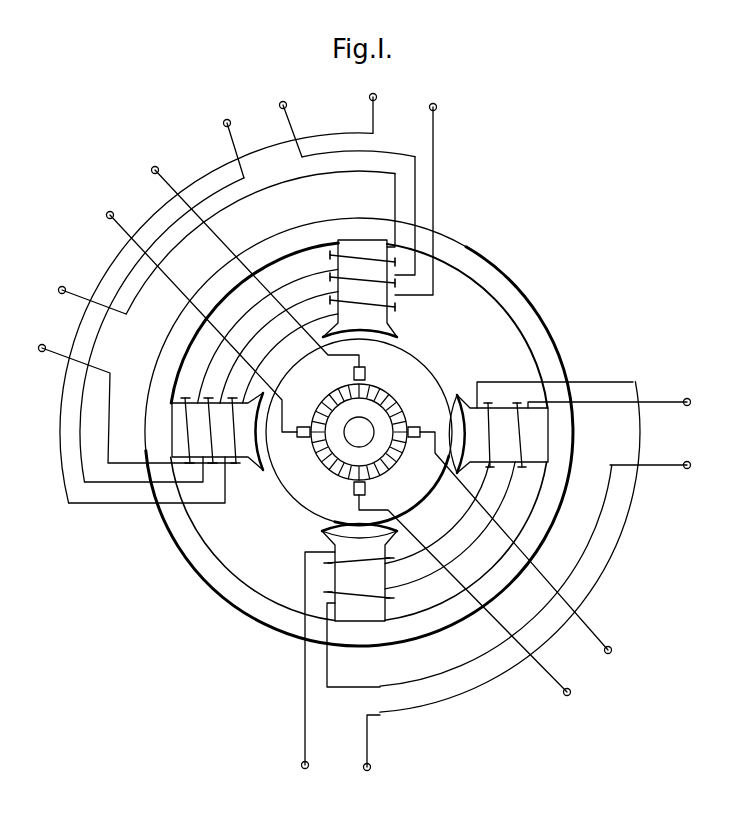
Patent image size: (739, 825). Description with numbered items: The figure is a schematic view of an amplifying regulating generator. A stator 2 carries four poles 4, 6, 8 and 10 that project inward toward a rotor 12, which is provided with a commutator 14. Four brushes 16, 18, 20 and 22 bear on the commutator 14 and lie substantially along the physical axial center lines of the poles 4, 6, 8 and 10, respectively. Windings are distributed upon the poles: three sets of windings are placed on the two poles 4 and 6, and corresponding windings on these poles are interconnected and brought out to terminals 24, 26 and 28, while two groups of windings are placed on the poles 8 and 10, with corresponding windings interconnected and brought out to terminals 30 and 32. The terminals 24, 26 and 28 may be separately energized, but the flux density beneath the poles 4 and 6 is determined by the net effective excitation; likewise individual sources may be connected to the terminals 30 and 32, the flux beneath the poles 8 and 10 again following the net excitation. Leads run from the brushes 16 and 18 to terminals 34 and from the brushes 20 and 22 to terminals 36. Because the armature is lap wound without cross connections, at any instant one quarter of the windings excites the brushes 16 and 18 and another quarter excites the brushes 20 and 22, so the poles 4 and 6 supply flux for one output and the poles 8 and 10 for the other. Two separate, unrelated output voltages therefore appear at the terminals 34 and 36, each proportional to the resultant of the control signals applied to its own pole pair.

The stator 2 is at (495, 510).
The pole 4 is at (255, 369).
The pole 6 is at (360, 288).
The pole 8 is at (466, 492).
The pole 10 is at (359, 572).
The rotor 12 is at (414, 360).
The commutator 14 is at (359, 432).
The brush 16 is at (307, 439).
The brush 18 is at (375, 377).
The brush 20 is at (410, 427).
The brush 22 is at (353, 492).
The terminals 24 is at (217, 317).
The terminals 26 is at (247, 292).
The terminals 28 is at (248, 297).
The terminals 30 is at (512, 543).
The terminals 32 is at (471, 579).
The terminals 34 is at (133, 193).
The terminals 36 is at (588, 671).